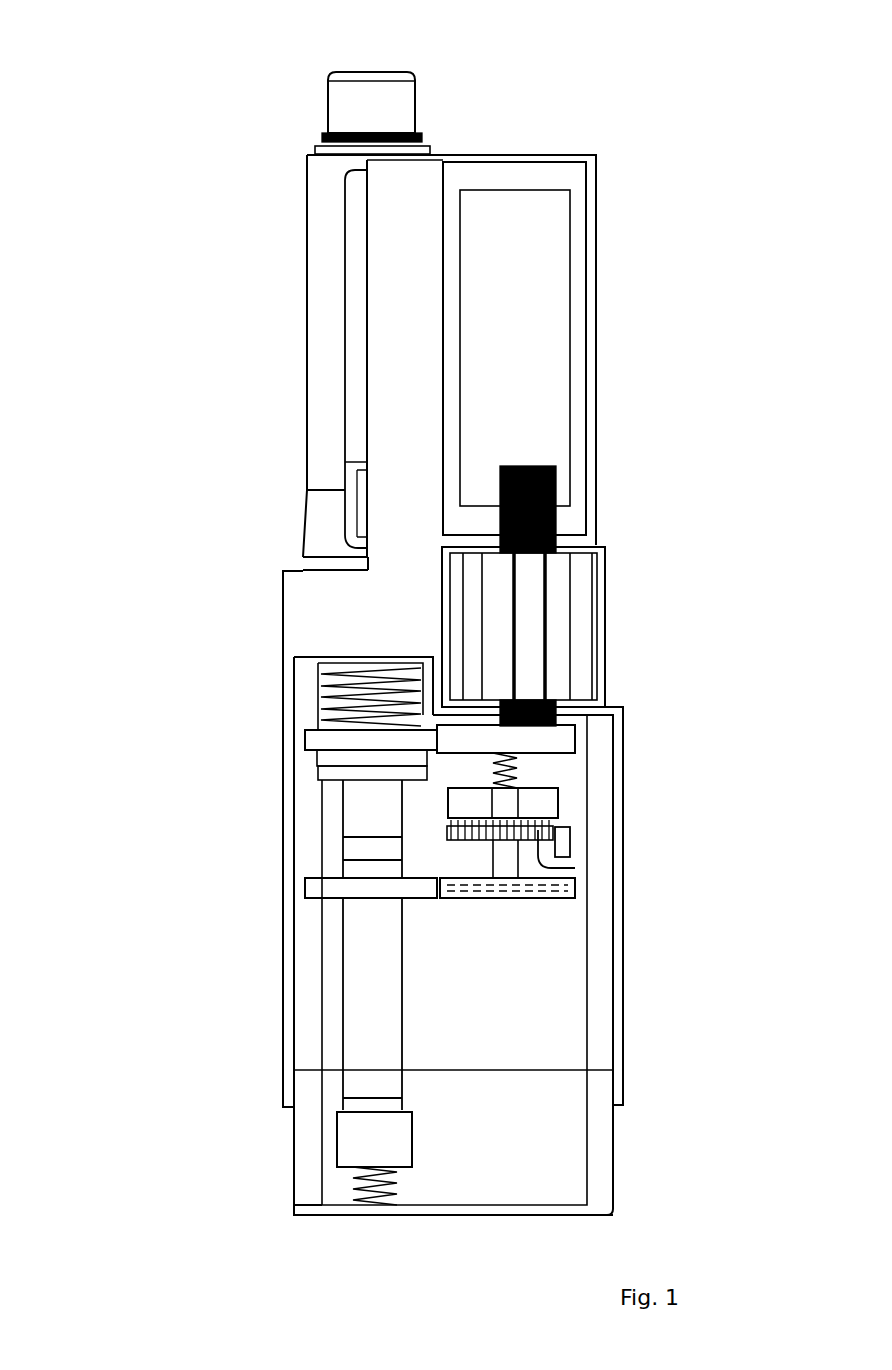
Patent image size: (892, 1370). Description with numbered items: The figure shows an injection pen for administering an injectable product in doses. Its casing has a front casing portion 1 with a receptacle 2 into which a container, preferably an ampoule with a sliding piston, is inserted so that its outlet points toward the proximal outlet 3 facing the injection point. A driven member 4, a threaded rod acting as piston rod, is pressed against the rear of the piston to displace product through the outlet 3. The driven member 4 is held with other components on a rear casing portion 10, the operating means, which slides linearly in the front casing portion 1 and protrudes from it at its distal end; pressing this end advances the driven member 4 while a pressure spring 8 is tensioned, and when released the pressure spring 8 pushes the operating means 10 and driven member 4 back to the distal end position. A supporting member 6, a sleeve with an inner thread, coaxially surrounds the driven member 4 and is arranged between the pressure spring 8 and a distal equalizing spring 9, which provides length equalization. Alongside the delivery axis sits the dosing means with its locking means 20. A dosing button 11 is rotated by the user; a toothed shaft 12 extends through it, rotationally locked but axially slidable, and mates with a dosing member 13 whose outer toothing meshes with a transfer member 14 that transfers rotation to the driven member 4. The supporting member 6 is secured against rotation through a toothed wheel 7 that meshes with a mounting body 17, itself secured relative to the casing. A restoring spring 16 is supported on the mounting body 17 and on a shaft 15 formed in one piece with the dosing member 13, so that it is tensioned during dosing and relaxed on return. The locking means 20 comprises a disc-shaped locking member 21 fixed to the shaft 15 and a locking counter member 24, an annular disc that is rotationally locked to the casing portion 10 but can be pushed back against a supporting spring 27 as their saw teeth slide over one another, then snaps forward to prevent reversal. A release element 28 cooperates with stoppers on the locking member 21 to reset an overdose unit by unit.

The front casing portion 1 is at (302, 605).
The receptacle 2 is at (322, 230).
The proximal outlet 3 is at (385, 53).
The driven member 4 is at (347, 465).
The supporting member 6 is at (358, 813).
The toothed wheel 7 is at (323, 887).
The pressure spring 8 is at (330, 693).
The equalizing spring 9 is at (353, 1187).
The rear casing portion 10 is at (307, 1203).
The dosing button 11 is at (603, 582).
The shaft 12 is at (538, 465).
The dosing member 13 is at (563, 740).
The transfer member 14 is at (322, 737).
The shaft 15 is at (520, 769).
The restoring spring 16 is at (563, 897).
The mounting body 17 is at (538, 897).
The locking means 20 is at (611, 839).
The locking member 21 is at (575, 870).
The locking counter member 24 is at (547, 805).
The supporting spring 27 is at (522, 782).
The release element 28 is at (570, 848).